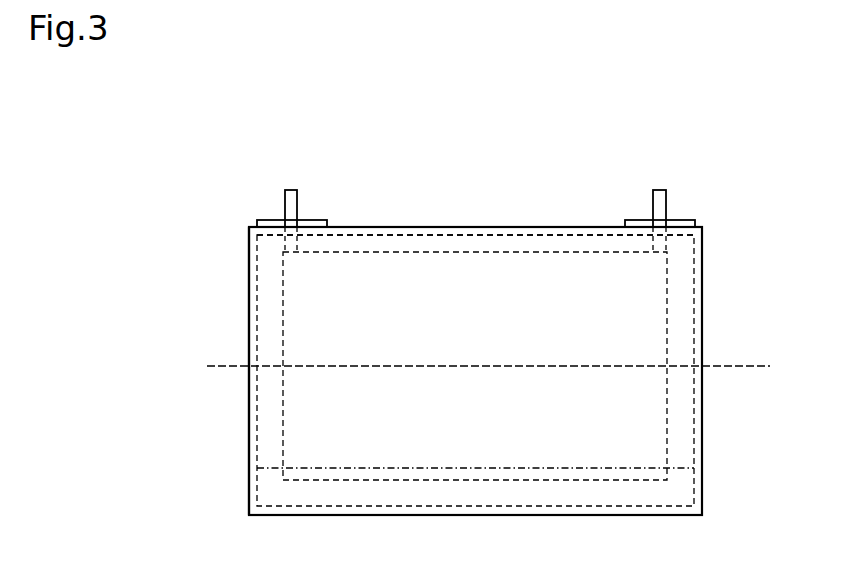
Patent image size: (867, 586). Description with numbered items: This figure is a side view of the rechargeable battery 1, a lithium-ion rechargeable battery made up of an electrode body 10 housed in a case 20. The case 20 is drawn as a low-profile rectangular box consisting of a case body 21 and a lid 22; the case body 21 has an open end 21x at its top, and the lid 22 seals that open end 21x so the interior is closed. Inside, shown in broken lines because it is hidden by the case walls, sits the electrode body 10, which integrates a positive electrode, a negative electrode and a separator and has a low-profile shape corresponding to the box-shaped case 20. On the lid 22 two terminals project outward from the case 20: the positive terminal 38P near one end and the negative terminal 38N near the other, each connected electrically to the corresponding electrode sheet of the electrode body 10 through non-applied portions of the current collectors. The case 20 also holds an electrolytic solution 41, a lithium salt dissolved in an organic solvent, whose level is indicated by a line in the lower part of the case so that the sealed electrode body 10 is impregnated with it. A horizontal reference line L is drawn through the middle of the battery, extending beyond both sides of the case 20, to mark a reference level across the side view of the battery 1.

The rechargeable battery 1 is at (128, 189).
The electrode body 10 is at (670, 415).
The case 20 is at (702, 224).
The case body 21 is at (249, 274).
The open end 21x is at (377, 232).
The lid 22 is at (480, 227).
The positive terminal 38P is at (292, 189).
The negative terminal 38N is at (659, 189).
The electrolytic solution 41 is at (450, 468).
The center line L is at (748, 365).